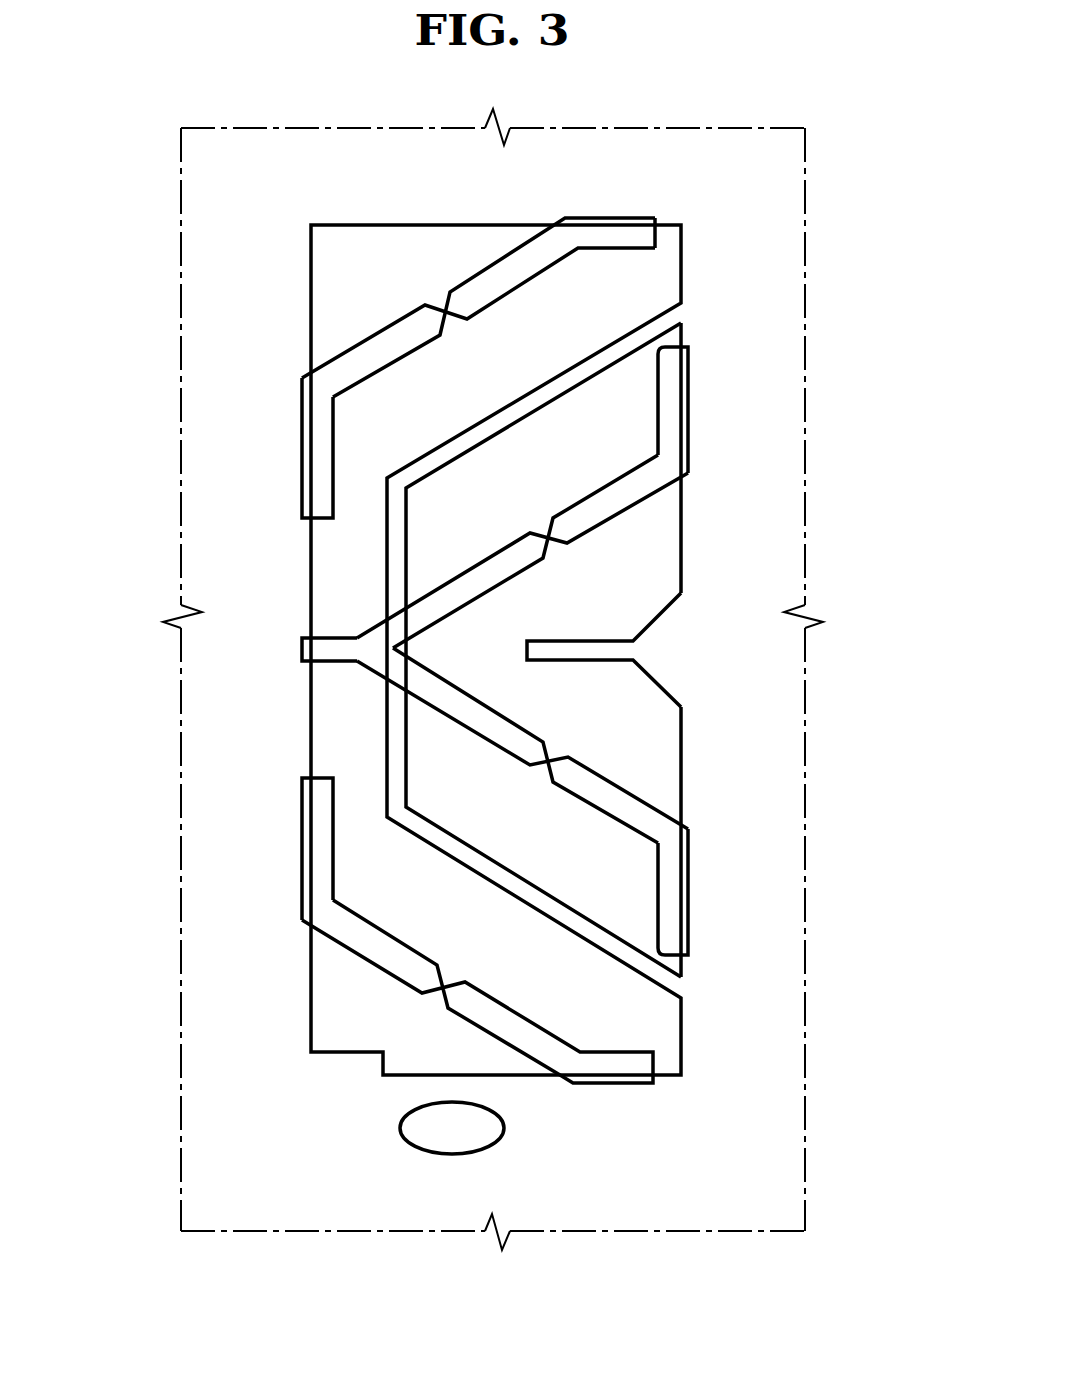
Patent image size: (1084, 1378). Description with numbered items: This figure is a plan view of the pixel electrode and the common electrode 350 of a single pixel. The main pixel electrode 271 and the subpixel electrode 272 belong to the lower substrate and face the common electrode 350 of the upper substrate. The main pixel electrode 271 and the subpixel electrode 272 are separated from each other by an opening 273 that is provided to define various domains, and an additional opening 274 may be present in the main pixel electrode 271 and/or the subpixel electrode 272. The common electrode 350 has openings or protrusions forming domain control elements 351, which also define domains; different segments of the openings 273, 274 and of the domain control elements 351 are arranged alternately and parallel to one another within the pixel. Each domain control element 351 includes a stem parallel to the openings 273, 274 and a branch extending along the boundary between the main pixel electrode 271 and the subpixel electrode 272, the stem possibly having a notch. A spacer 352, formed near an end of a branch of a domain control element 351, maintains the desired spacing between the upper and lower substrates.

The main pixel electrode 271 is at (325, 264).
The subpixel electrode 272 is at (420, 734).
The opening 273 is at (600, 378).
The additional opening 274 is at (657, 653).
The common electrode 350 is at (242, 1058).
The domain control element 351 is at (320, 369).
The spacer 352 is at (398, 1172).